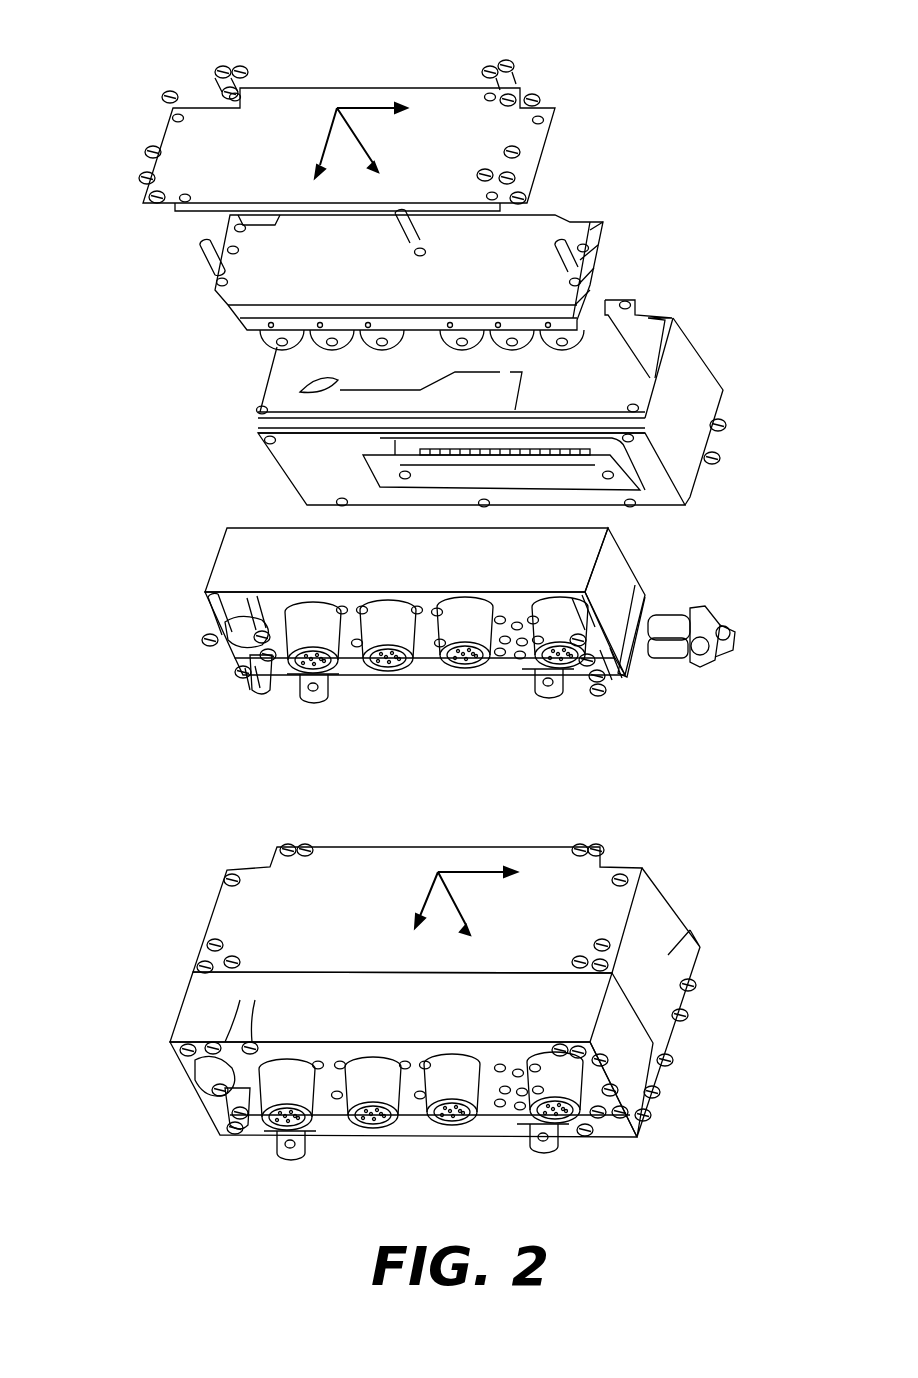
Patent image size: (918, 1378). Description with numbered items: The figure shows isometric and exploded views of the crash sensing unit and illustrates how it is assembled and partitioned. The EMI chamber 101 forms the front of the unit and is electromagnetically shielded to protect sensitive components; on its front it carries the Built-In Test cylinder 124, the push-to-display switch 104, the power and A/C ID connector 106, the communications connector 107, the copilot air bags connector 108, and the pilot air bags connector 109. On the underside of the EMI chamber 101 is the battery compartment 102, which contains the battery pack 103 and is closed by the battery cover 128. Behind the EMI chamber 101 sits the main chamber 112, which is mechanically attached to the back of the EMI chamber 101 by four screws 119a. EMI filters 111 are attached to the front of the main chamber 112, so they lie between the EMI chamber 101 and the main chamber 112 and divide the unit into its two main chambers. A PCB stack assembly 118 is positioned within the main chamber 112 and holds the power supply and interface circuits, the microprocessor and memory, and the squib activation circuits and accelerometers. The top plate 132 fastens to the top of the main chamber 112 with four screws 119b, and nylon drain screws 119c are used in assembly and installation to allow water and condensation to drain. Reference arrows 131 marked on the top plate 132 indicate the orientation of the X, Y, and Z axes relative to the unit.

The EMI chamber 101 is at (215, 570).
The battery compartment 102 is at (640, 650).
The battery pack 103 is at (672, 615).
The push-to-display switch 104 is at (265, 690).
The power and A/C ID connector 106 is at (322, 695).
The communications connector 107 is at (402, 680).
The copilot air bags connector 108 is at (472, 675).
The pilot air bags connector 109 is at (566, 690).
The EMI filter 111 is at (365, 470).
The main chamber 112 is at (275, 392).
The PCB stack assembly 118 is at (585, 222).
The screws 119a is at (585, 618).
The screws 119b is at (222, 68).
The nylon drain screws 119c is at (153, 177).
The Built-In Test (BIT) cylinder 124 is at (235, 650).
The battery cover 128 is at (710, 648).
The reference arrows 131 is at (337, 108).
The top plate 132 is at (175, 136).